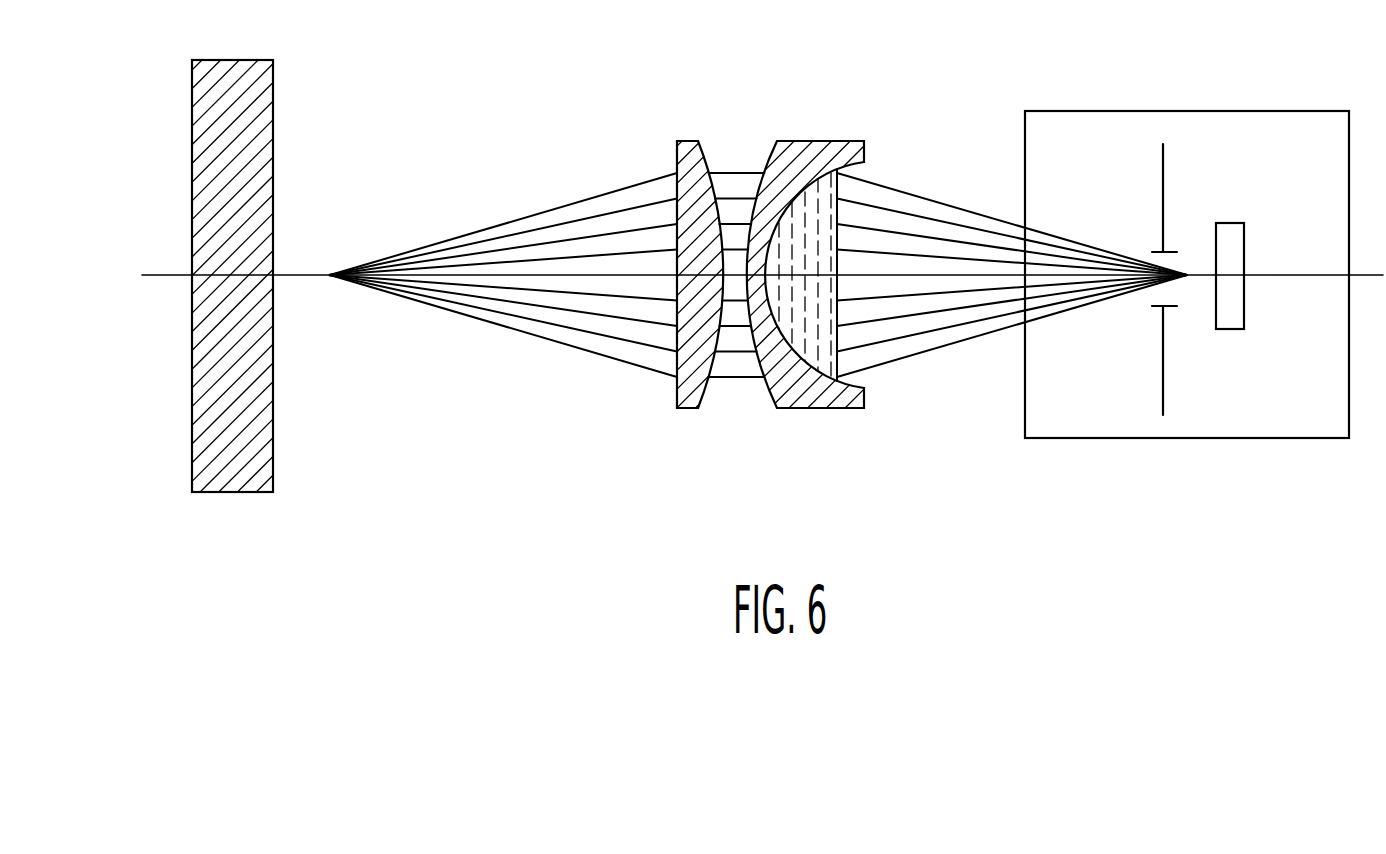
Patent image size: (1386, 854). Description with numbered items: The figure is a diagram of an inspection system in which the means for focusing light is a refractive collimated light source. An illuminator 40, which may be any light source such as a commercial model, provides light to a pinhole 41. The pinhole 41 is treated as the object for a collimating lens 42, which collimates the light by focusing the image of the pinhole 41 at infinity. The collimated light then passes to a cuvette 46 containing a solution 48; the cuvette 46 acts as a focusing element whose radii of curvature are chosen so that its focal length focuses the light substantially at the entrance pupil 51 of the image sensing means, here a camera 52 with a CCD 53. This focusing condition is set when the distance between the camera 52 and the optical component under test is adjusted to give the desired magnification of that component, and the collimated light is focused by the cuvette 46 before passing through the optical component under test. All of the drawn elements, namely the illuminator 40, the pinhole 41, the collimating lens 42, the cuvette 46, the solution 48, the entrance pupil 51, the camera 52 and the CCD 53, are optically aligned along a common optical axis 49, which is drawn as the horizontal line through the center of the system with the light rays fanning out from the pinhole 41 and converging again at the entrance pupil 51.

The illuminator 40 is at (274, 490).
The pinhole 41 is at (330, 275).
The collimating lens 42 is at (684, 141).
The cuvette 46 is at (813, 409).
The solution 48 is at (819, 202).
The optical axis 49 is at (562, 278).
The entrance pupil 51 is at (1166, 252).
The camera 52 is at (1133, 438).
The CCD 53 is at (1230, 223).